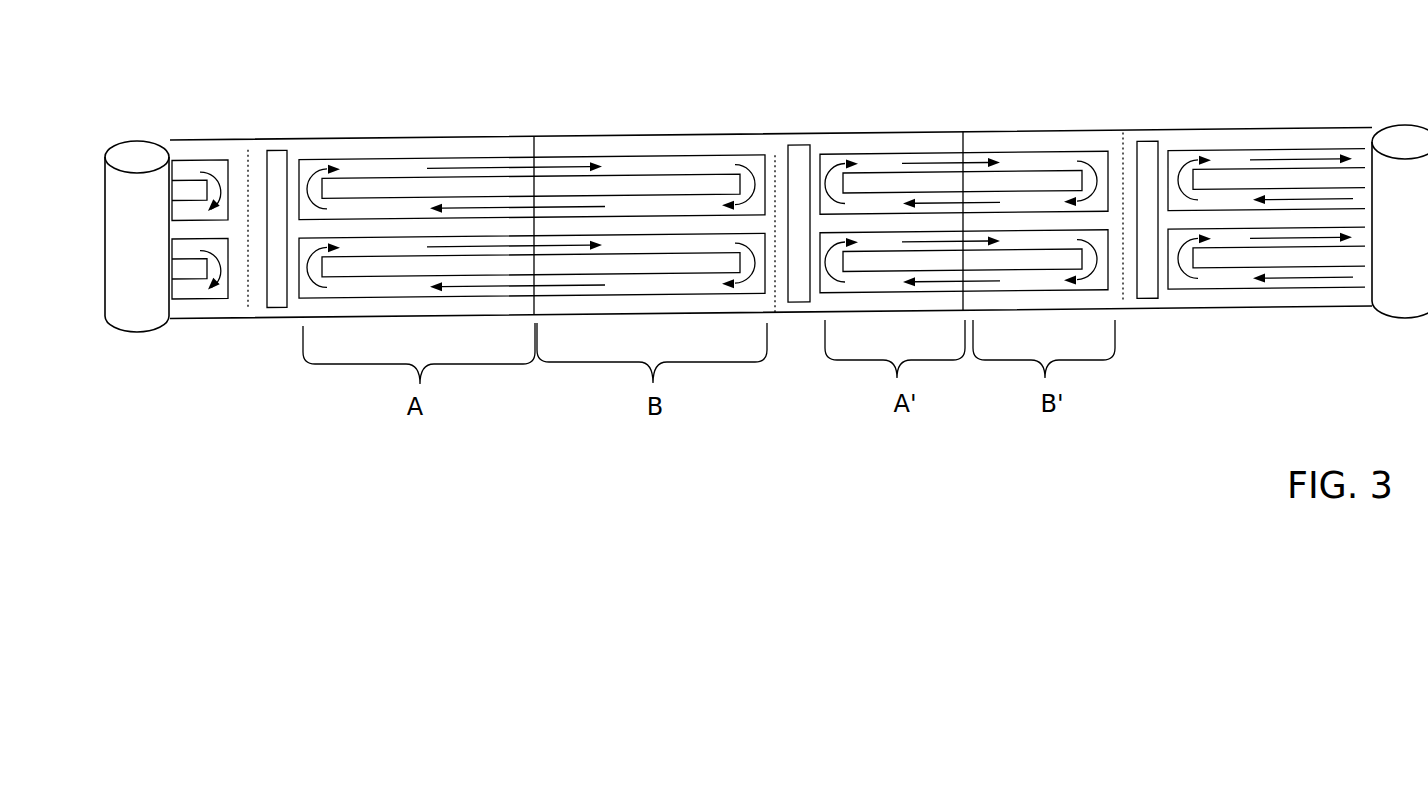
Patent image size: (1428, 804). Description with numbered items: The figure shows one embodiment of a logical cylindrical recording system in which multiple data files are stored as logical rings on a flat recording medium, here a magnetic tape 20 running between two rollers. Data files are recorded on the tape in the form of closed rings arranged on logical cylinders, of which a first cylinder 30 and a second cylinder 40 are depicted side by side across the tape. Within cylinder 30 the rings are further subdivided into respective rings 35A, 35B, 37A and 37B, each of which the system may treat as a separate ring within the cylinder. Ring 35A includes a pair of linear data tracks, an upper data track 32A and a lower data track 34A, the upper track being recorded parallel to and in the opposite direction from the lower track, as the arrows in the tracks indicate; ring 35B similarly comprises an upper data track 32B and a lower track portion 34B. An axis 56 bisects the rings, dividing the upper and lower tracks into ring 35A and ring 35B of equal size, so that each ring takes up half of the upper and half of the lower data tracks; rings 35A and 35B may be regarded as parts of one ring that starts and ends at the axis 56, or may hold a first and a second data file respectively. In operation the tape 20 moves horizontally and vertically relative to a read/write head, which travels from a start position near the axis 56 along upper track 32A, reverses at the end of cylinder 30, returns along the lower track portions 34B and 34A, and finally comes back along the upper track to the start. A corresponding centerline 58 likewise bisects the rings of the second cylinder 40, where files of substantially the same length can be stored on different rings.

The tape 20 is at (365, 548).
The logical cylinder 30 is at (520, 274).
The logical cylinder 40 is at (949, 276).
The upper data track 32A is at (393, 165).
The lower data track 34A is at (433, 203).
The ring 35A is at (308, 170).
The ring 37A is at (310, 282).
The upper data track 32B is at (639, 167).
The lower track portion 34B is at (668, 207).
The ring 35B is at (753, 170).
The ring 37B is at (760, 283).
The axis 56 is at (534, 135).
The centerline 58 is at (963, 130).